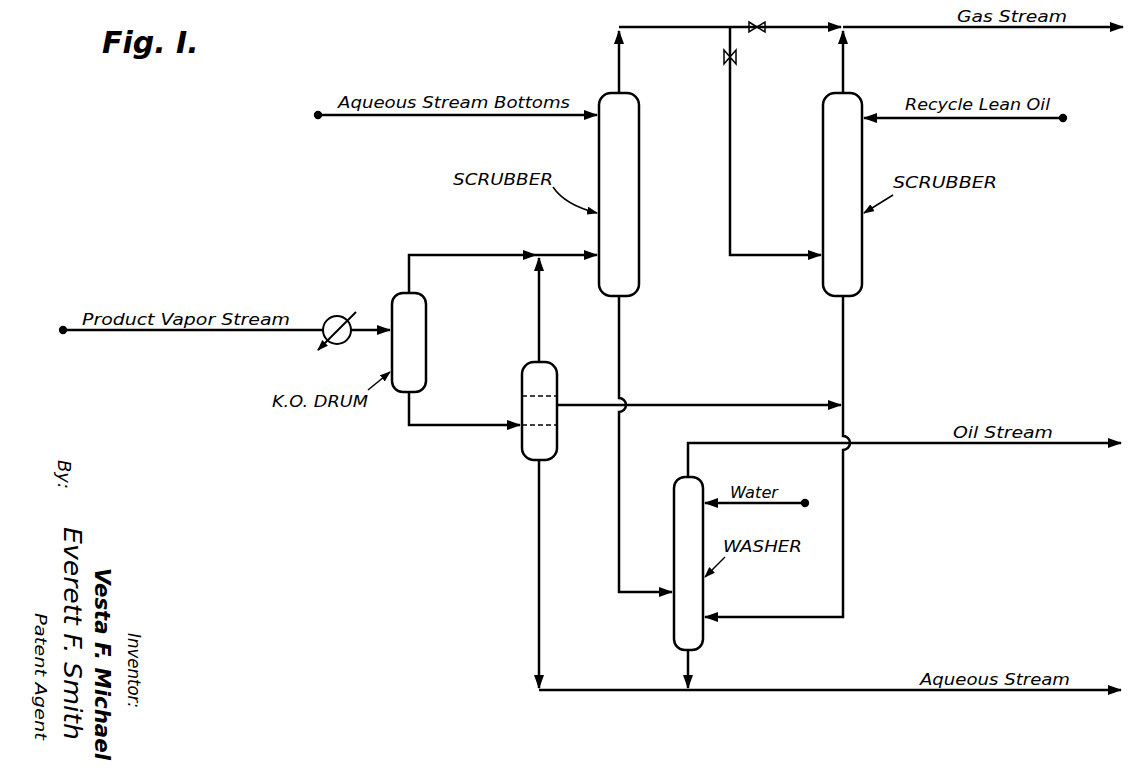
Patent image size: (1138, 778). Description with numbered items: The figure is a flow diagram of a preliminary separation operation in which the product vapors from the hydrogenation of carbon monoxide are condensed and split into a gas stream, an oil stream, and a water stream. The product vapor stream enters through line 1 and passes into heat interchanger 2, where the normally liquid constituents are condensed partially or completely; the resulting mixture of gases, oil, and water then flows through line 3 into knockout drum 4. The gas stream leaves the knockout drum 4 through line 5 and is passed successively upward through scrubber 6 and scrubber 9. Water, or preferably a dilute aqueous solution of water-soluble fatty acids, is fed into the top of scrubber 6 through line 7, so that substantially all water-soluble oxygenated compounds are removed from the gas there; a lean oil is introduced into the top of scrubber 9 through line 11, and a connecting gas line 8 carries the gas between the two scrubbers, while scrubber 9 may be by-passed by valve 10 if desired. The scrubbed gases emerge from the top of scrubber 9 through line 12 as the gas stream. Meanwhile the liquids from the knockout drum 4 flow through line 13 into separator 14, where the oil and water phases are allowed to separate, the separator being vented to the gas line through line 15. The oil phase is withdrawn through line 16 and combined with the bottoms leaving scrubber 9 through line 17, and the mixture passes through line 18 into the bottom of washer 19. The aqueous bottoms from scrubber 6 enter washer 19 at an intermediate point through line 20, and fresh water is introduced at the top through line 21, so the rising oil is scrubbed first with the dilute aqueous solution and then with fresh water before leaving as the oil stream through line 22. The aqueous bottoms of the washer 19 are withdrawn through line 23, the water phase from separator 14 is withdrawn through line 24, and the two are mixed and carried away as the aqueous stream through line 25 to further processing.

The line 1 is at (147, 333).
The heat interchanger 2 is at (343, 317).
The line 3 is at (366, 328).
The knockout drum 4 is at (427, 338).
The line 5 is at (490, 255).
The scrubber 6 is at (639, 166).
The line 7 is at (431, 118).
The gas line with valve 8 is at (730, 166).
The scrubber 9 is at (823, 166).
The valve 10 is at (757, 26).
The line 11 is at (979, 121).
The line 12 is at (983, 30).
The line 13 is at (440, 429).
The separator 14 is at (522, 386).
The line 15 is at (539, 336).
The line 16 is at (745, 404).
The line 17 is at (843, 366).
The line 18 is at (843, 531).
The washer 19 is at (674, 500).
The line 20 is at (618, 500).
The line 21 is at (765, 506).
The line 22 is at (978, 447).
The washer bottoms line 23 is at (688, 675).
The aqueous line from separator 24 is at (539, 566).
The aqueous stream line 25 is at (984, 694).